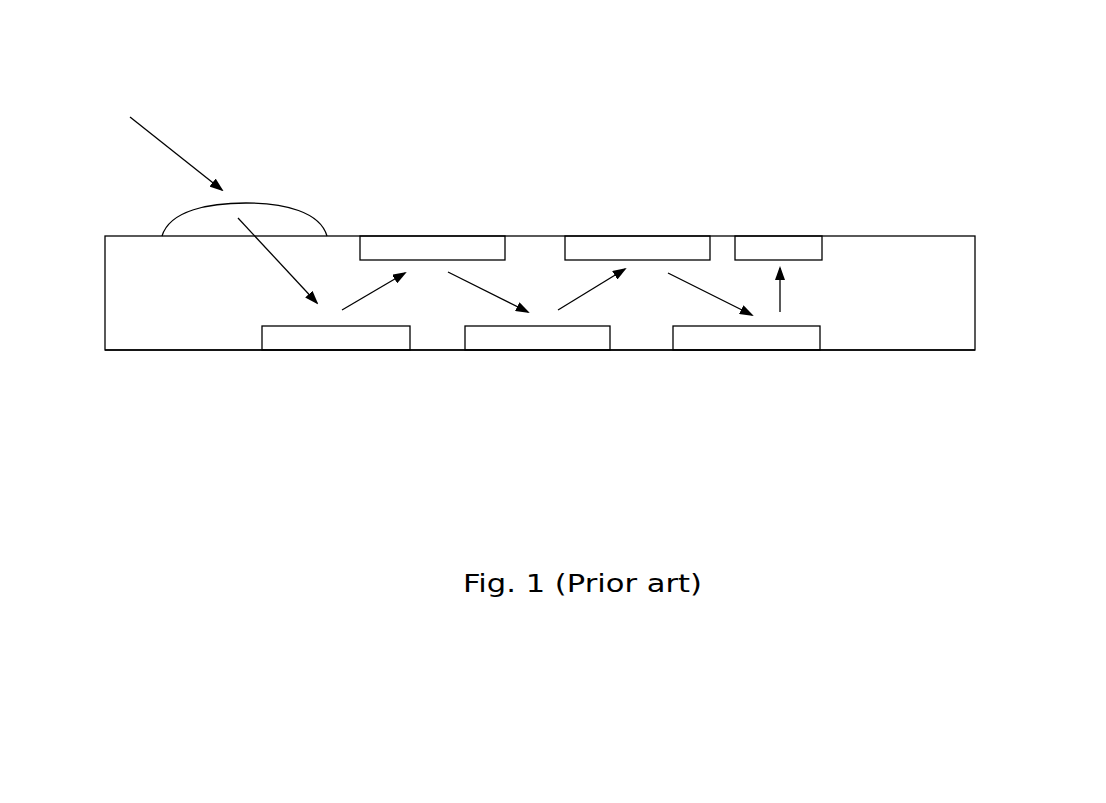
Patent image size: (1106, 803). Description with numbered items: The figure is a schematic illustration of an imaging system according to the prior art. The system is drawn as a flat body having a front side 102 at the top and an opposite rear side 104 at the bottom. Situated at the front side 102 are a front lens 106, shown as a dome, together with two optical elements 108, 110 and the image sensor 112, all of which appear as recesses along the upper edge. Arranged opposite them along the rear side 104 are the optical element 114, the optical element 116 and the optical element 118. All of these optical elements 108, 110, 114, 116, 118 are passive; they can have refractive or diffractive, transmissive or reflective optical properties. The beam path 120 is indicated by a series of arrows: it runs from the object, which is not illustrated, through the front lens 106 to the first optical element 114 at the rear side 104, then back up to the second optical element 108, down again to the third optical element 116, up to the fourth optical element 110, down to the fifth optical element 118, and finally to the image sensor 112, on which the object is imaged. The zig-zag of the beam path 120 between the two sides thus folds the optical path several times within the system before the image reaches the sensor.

The front side 102 is at (898, 236).
The rear side 104 is at (932, 349).
The front lens 106 is at (305, 204).
The second optical element 108 is at (468, 236).
The fourth optical element 110 is at (658, 236).
The image sensor 112 is at (797, 240).
The first optical element 114 is at (357, 338).
The third optical element 116 is at (550, 340).
The fifth optical element 118 is at (773, 342).
The beam path 120 is at (168, 138).